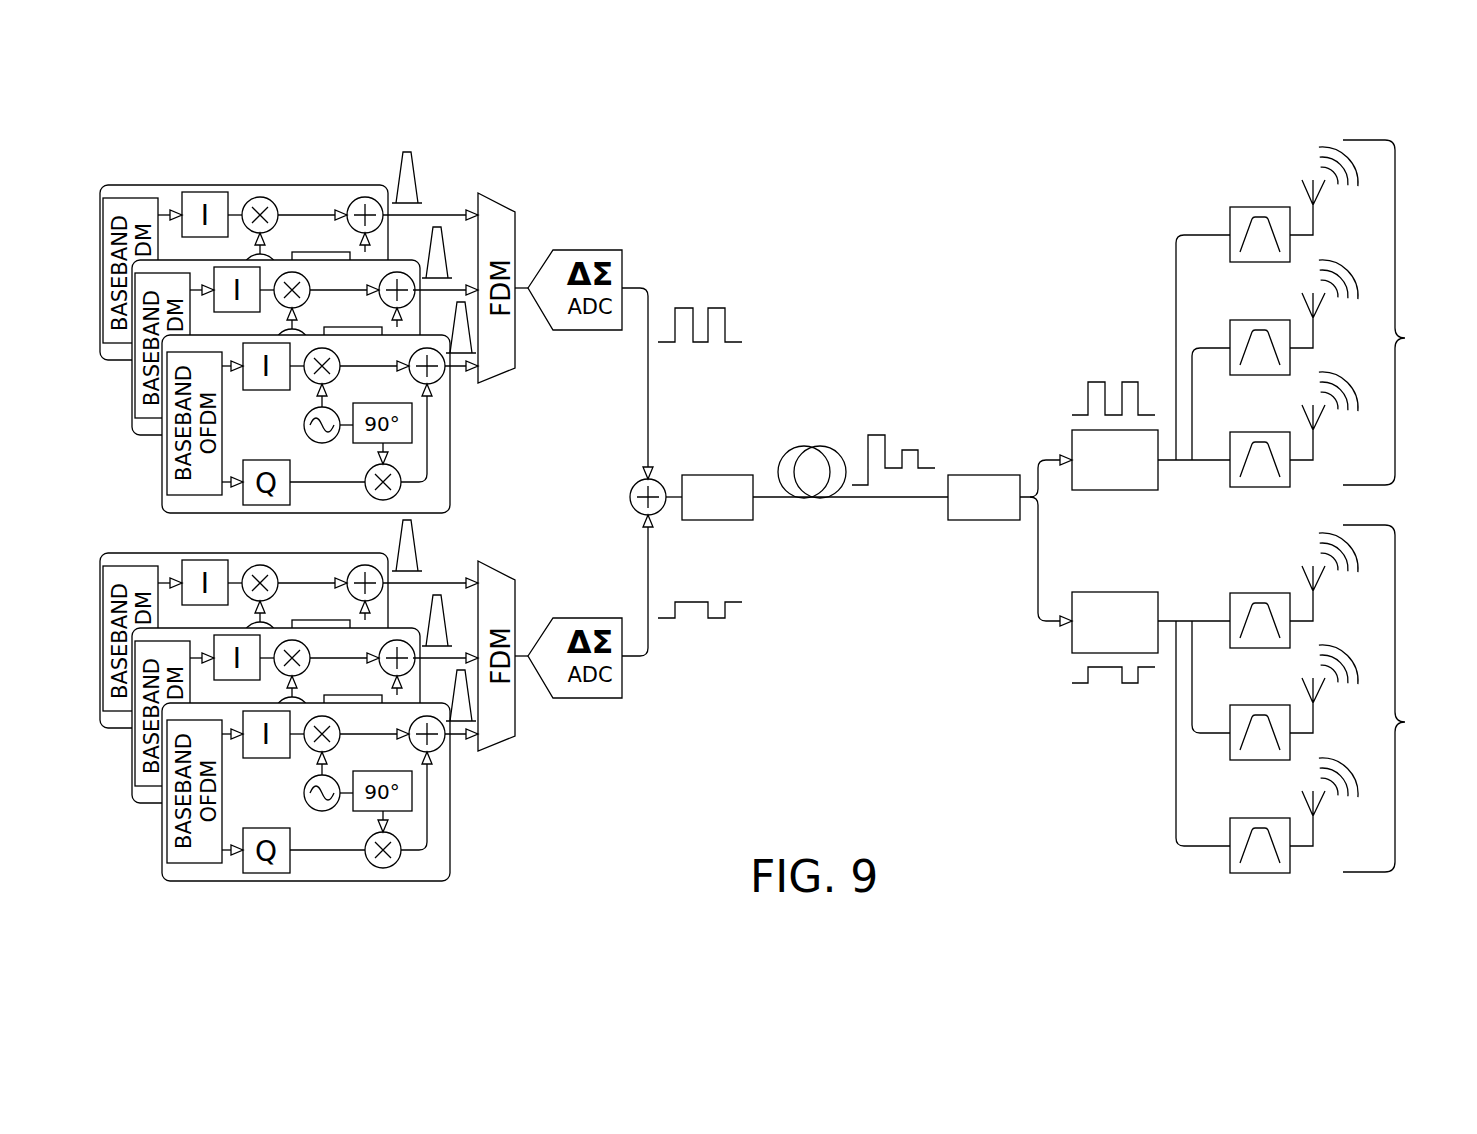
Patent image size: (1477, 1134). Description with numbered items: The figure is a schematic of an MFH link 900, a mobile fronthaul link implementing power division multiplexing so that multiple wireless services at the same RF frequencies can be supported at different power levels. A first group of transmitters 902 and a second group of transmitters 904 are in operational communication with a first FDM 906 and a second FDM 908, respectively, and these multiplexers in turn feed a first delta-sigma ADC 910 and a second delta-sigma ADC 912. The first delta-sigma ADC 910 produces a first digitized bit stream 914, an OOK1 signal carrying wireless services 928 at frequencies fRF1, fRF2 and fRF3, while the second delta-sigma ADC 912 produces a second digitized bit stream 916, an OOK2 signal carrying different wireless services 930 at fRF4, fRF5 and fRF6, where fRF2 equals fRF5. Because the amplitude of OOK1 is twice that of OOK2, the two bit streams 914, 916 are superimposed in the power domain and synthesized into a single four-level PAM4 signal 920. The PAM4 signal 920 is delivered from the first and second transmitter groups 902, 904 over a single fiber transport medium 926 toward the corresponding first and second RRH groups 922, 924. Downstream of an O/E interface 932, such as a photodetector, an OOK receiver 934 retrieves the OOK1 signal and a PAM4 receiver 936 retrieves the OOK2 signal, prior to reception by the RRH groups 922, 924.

The MFH link 900 is at (977, 223).
The first group of transmitters 902 is at (253, 170).
The second group of transmitters 904 is at (307, 893).
The first FDM 906 is at (497, 197).
The second FDM 908 is at (517, 733).
The first delta-sigma ADC 910 is at (585, 250).
The second delta-sigma ADC 912 is at (612, 700).
The first digitized bit stream 914 is at (727, 285).
The second digitized bit stream 916 is at (728, 624).
The PAM4 signal 920 is at (902, 437).
The first RRH group 922 is at (630, 497).
The second RRH group 924 is at (1317, 699).
The fiber transport medium 926 is at (925, 500).
The wireless services 928 is at (418, 156).
The different wireless services 930 is at (452, 538).
The O/E interface 932 is at (987, 523).
The OOK receiver 934 is at (1093, 490).
The PAM4 receiver 936 is at (1102, 592).